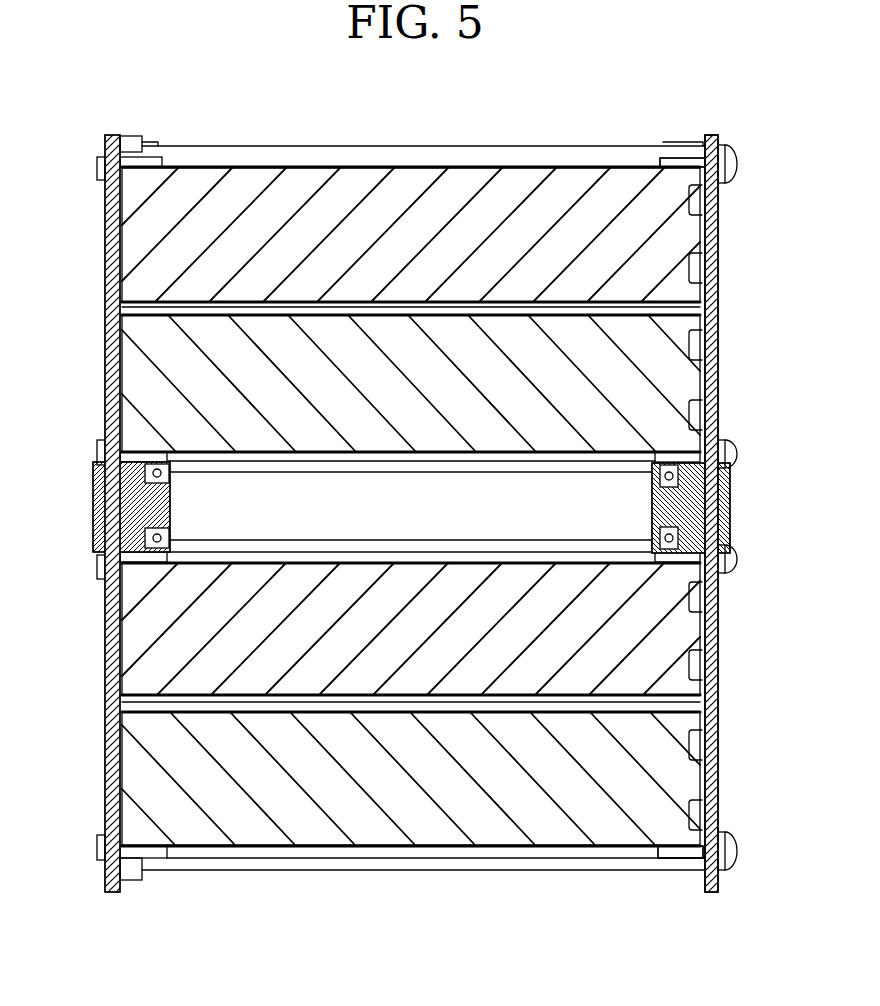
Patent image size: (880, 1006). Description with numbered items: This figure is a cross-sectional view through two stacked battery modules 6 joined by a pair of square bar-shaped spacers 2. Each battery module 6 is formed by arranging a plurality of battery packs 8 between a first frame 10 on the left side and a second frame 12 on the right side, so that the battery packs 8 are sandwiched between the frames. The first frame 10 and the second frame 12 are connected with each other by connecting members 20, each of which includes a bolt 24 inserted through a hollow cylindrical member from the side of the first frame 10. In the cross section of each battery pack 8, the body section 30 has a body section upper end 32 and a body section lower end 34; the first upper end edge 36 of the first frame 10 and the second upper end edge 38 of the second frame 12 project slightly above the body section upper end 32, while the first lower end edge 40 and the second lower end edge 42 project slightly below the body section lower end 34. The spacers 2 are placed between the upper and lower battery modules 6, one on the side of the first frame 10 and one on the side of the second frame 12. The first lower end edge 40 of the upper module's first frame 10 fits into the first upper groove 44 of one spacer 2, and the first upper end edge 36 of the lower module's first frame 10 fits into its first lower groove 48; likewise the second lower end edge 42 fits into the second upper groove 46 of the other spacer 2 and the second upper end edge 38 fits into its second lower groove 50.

The spacer 2 is at (90, 477).
The battery module 6 is at (720, 318).
The battery pack 8 is at (274, 165).
The first frame 10 is at (105, 278).
The second frame 12 is at (718, 286).
The connecting member 20 is at (507, 145).
The bolt 24 is at (738, 158).
The body section 30 is at (640, 231).
The body section upper end 32 is at (412, 165).
The body section lower end 34 is at (475, 453).
The first upper end edge 36 is at (124, 135).
The second upper end edge 38 is at (709, 135).
The first lower end edge 40 is at (95, 490).
The second lower end edge 42 is at (731, 485).
The first upper groove 44 is at (97, 448).
The second upper groove 46 is at (170, 489).
The first lower groove 48 is at (97, 558).
The second lower groove 50 is at (170, 519).